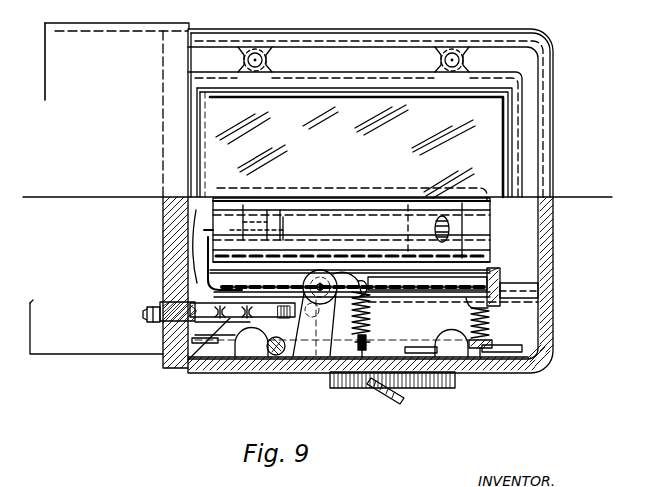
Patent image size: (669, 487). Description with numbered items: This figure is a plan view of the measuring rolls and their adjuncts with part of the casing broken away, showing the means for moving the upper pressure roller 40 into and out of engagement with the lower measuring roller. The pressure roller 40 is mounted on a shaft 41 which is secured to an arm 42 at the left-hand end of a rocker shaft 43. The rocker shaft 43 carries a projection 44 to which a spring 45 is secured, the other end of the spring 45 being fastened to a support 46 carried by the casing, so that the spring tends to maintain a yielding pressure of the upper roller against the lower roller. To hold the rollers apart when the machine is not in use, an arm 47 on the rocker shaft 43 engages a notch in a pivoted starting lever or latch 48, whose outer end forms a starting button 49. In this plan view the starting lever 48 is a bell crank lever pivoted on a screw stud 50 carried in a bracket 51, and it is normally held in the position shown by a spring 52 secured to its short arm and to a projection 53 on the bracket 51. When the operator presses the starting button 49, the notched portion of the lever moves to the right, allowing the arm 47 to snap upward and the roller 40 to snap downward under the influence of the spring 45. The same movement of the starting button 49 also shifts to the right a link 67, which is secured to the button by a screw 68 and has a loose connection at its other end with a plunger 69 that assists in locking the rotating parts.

The pressure roller 40 is at (470, 173).
The shaft 41 is at (328, 213).
The arm 42 is at (163, 213).
The rocker shaft 43 is at (463, 280).
The projection 44 is at (480, 309).
The spring 45 is at (492, 328).
The support 46 is at (522, 348).
The arm 47 is at (305, 323).
The starting lever 48 is at (333, 372).
The starting button 49 is at (402, 400).
The screw stud 50 is at (303, 325).
The bracket 51 is at (318, 347).
The spring 52 is at (371, 316).
The projection 53 is at (365, 342).
The link 67 is at (163, 362).
The screw 68 is at (278, 312).
The plunger 69 is at (152, 315).